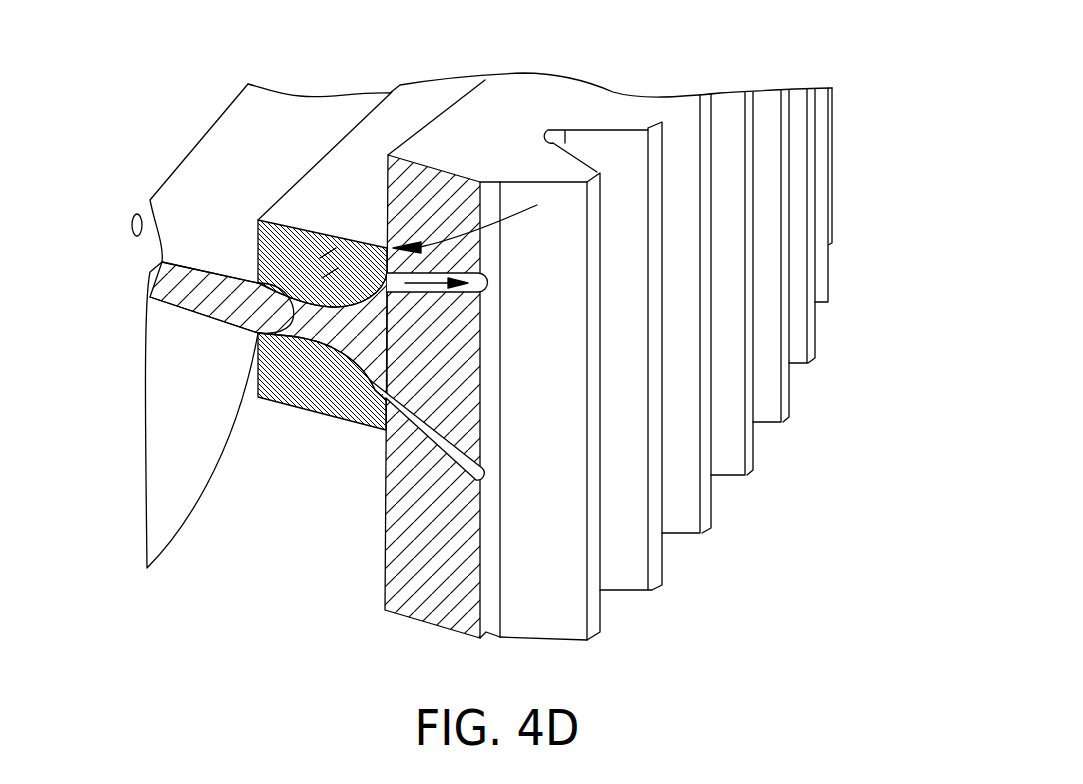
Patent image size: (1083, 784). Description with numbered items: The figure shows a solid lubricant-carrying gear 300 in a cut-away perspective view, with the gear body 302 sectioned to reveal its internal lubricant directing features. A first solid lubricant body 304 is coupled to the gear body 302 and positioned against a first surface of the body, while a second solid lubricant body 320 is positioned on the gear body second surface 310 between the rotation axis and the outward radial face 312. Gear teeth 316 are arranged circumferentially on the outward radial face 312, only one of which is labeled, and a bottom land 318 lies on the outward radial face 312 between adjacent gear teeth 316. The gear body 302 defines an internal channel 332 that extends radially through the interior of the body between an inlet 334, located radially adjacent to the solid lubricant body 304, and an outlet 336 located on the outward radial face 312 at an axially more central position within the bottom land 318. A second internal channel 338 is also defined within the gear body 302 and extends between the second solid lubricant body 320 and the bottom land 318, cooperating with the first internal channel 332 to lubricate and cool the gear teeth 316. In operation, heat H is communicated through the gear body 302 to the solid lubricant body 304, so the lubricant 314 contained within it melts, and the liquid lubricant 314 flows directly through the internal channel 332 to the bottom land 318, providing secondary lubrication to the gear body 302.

The solid lubricant-carrying gear 300 is at (262, 548).
The gear body 302 is at (227, 305).
The solid lubricant body 304 is at (280, 245).
The gear body second surface 310 is at (230, 280).
The outward radial face 312 is at (858, 385).
The lubricant 314 is at (324, 278).
The gear teeth 316 is at (577, 170).
The bottom land 318 is at (497, 396).
The second solid lubricant body 320 is at (273, 390).
The internal channel 332 is at (435, 250).
The inlet 334 is at (390, 282).
The outlet 336 is at (487, 285).
The second internal channel 338 is at (442, 440).
The heat H is at (512, 213).